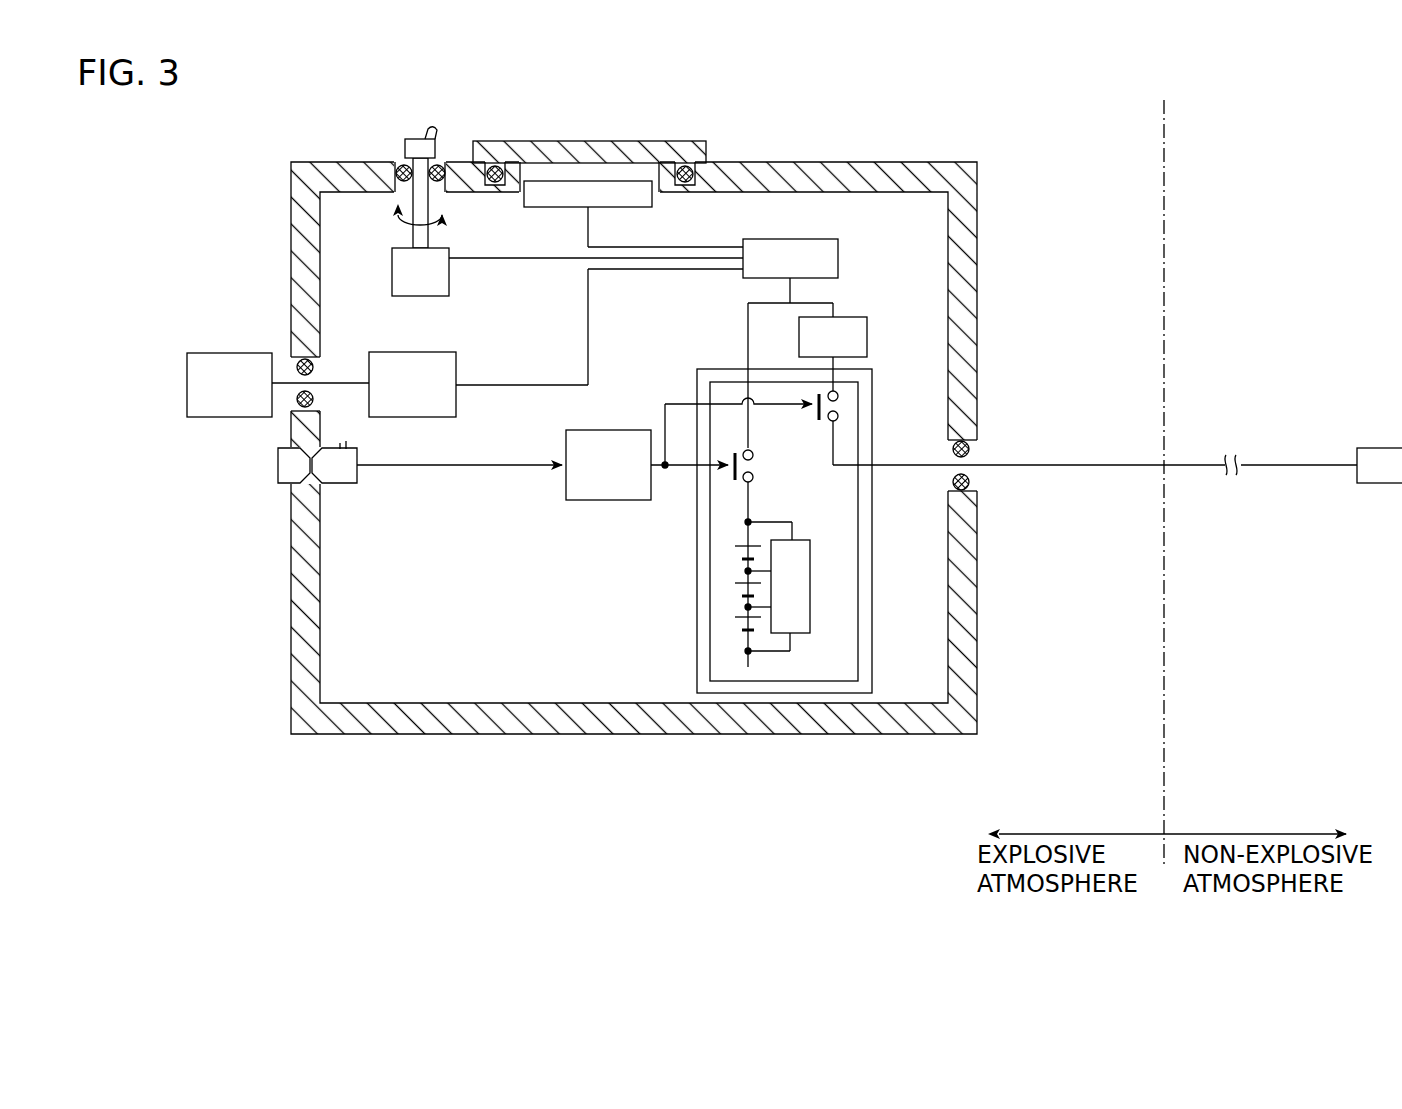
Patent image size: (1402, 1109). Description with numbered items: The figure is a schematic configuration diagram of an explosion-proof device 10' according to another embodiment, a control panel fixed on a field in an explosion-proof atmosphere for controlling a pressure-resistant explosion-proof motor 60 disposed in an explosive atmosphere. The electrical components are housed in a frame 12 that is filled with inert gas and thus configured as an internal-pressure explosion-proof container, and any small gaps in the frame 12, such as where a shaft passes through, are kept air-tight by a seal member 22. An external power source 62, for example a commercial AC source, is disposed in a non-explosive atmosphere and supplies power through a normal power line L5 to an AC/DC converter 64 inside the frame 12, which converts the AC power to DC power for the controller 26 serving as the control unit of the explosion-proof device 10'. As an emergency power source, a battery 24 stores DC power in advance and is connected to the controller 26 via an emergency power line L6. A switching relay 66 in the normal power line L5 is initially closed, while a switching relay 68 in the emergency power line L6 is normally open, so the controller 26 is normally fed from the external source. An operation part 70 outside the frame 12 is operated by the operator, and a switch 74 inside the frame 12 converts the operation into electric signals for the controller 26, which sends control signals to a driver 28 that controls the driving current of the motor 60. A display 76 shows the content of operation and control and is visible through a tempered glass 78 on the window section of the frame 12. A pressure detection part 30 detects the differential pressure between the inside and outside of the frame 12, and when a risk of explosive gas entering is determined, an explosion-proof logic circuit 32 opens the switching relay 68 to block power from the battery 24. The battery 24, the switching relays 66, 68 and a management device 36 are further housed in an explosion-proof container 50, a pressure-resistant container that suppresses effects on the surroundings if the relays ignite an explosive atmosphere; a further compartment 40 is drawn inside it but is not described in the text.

The explosion-proof device 10' is at (772, 389).
The frame 12 is at (930, 162).
The seal member 22 is at (398, 166).
The battery 24 is at (878, 362).
The controller 26 is at (800, 238).
The driver 28 is at (450, 351).
The pressure detection part 30 is at (382, 485).
The explosion-proof logic circuit 32 is at (624, 430).
The management device 36 is at (811, 582).
The battery compartment 40 is at (732, 393).
The explosion-proof container 50 is at (698, 560).
The pressure-resistant explosion-proof motor 60 is at (220, 352).
The external power source 62 is at (1377, 447).
The AC/DC converter 64 is at (852, 317).
The switching relay 66 is at (846, 407).
The switching relay 68 is at (768, 463).
The operation part 70 is at (432, 138).
The switch 74 is at (392, 265).
The display 76 is at (625, 207).
The tempered glass 78 is at (628, 140).
The normal power line L5 is at (911, 462).
The emergency power line L6 is at (752, 496).